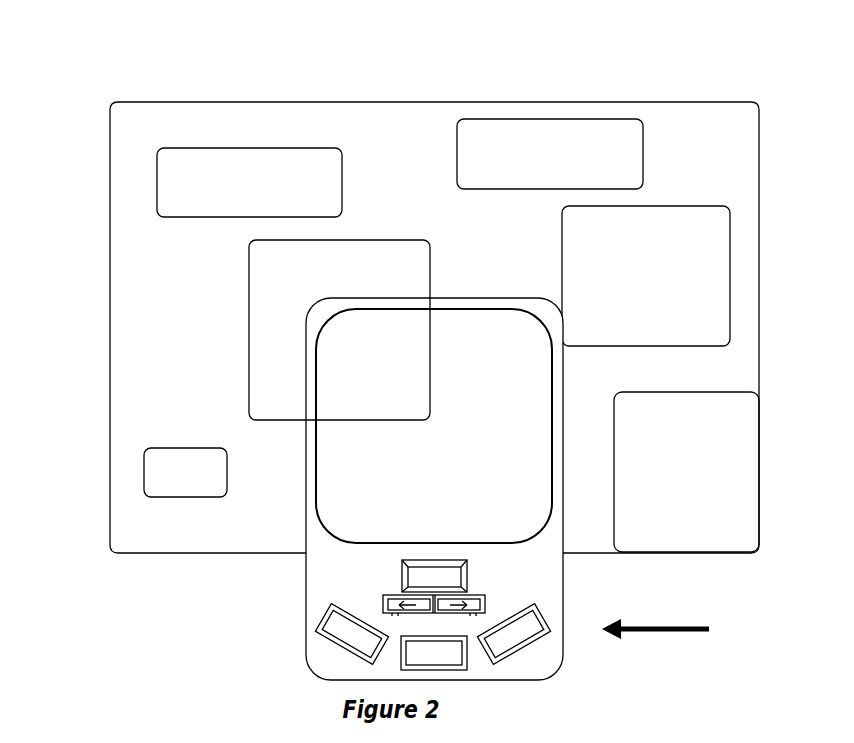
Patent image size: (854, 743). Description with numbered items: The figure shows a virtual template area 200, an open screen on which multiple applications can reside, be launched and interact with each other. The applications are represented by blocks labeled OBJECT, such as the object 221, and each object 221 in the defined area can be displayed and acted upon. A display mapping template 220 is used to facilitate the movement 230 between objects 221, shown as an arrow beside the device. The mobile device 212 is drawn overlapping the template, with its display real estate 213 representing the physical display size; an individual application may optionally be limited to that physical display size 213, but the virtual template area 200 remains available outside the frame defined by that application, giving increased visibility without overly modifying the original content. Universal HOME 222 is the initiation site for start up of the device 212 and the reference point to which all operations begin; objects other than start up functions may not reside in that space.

The virtual template area 200 is at (95, 52).
The device 212 is at (306, 590).
The display real estate 213 is at (345, 447).
The display mapping template 220 is at (123, 265).
The object 221 is at (456, 161).
The Universal HOME 222 is at (745, 537).
The movement 230 is at (694, 633).